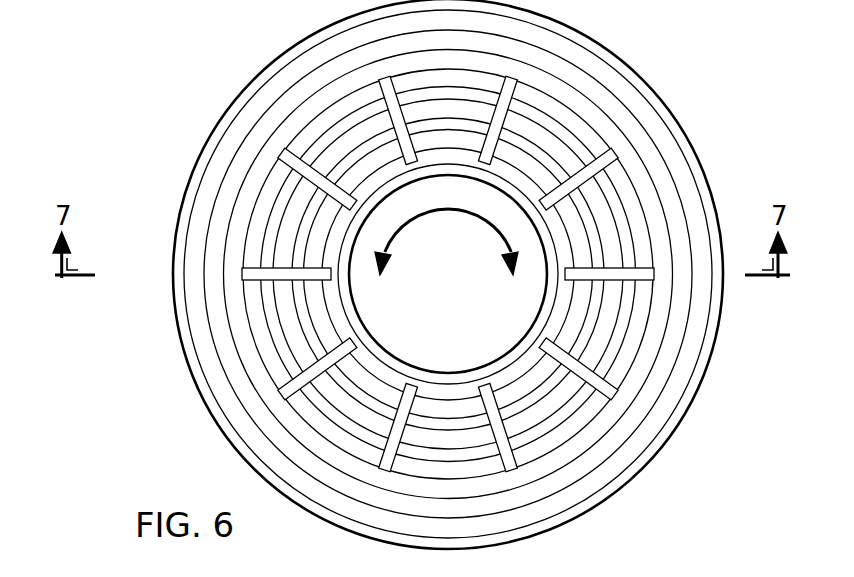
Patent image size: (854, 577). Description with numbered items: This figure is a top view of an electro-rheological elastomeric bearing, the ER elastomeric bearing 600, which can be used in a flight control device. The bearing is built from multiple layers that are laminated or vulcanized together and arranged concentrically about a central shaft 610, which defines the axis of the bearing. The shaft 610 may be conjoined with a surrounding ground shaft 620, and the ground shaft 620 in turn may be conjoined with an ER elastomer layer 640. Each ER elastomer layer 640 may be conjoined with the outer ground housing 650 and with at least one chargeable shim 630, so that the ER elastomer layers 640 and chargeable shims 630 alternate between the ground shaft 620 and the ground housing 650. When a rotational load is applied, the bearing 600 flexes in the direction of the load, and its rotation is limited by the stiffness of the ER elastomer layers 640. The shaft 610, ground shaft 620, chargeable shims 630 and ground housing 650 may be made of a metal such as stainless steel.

The ER elastomeric bearing 600 is at (676, 80).
The shaft 610 is at (469, 263).
The ground shaft 620 is at (540, 310).
The chargeable shim 630 is at (522, 405).
The ER elastomer layer 640 is at (250, 252).
The ground housing 650 is at (188, 185).